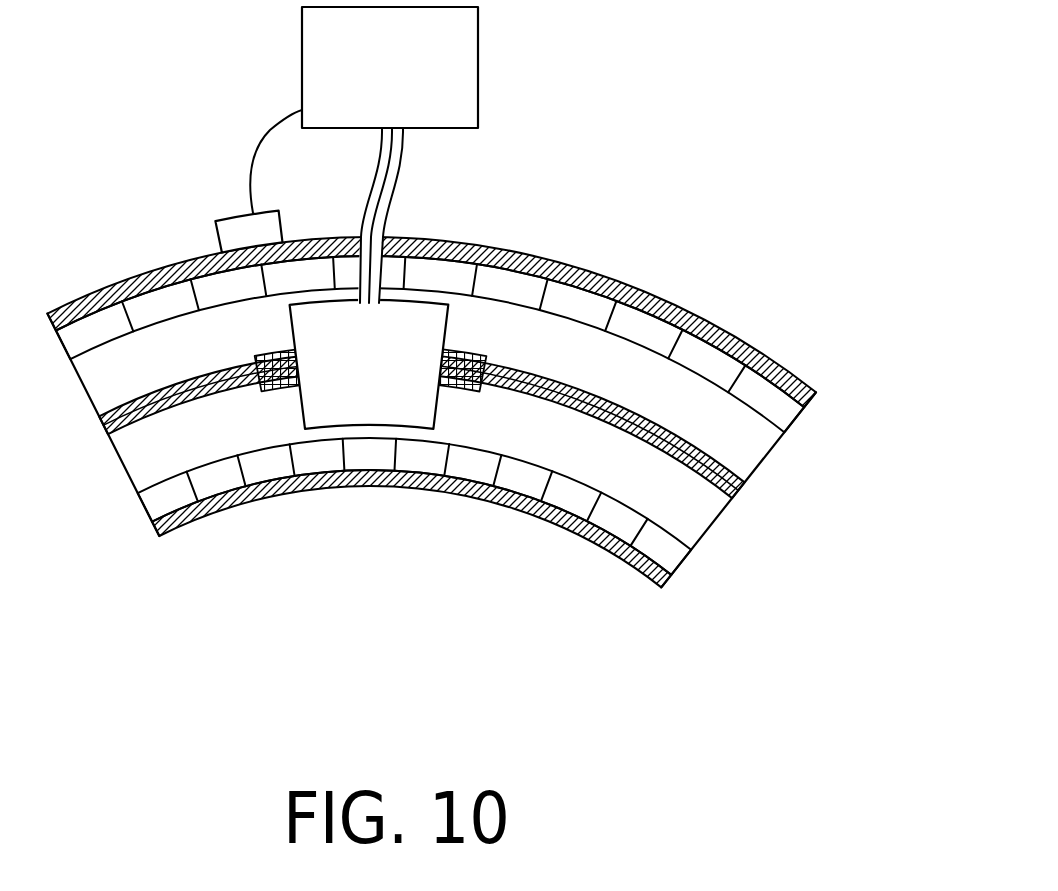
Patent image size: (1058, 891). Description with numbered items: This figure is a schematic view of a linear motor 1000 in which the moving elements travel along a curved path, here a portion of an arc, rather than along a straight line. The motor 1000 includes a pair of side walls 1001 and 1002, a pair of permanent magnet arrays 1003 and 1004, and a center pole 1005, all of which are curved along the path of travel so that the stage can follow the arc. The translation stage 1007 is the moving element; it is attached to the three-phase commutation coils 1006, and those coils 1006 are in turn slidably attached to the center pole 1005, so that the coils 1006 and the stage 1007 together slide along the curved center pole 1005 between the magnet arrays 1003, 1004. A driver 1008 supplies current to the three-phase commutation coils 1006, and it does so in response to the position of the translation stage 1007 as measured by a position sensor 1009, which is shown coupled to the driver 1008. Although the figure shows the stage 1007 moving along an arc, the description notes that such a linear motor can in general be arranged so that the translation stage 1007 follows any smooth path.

The linear motor 1000 is at (485, 335).
The side wall 1001 is at (772, 358).
The side wall 1002 is at (466, 496).
The permanent magnet array 1003 is at (668, 583).
The permanent magnet array 1004 is at (798, 421).
The center pole 1005 is at (740, 490).
The three-phase commutation coils 1006 is at (467, 345).
The translation stage 1007 is at (293, 331).
The driver 1008 is at (478, 57).
The position sensor 1009 is at (226, 181).